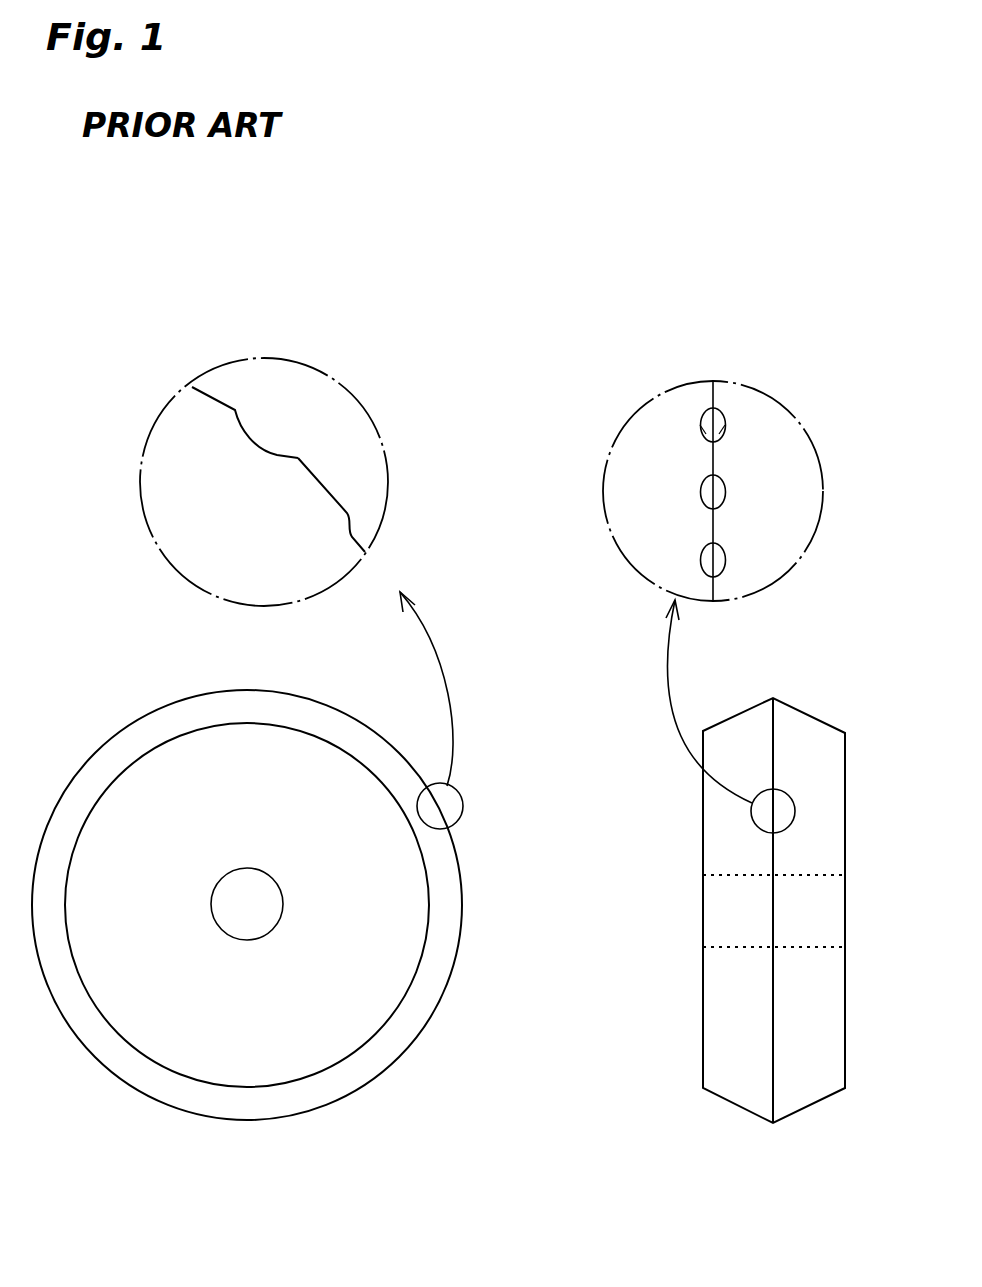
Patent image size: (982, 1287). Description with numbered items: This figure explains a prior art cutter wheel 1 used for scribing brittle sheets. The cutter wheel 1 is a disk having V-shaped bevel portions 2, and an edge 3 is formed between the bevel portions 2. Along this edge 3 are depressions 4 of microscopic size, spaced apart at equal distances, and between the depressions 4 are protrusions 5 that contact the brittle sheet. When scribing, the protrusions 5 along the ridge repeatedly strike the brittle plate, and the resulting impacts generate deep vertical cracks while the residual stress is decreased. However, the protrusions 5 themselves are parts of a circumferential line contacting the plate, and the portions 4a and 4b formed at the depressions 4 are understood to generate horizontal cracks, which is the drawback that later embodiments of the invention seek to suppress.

The cutter wheel 1 is at (109, 688).
The V-shaped bevel portions 2 is at (808, 1060).
The edge 3 is at (771, 975).
The depressions 4 is at (703, 423).
The protrusions 5 is at (700, 458).
The portion formed at the depression 4a is at (706, 434).
The portion formed at the depression 4b is at (719, 434).